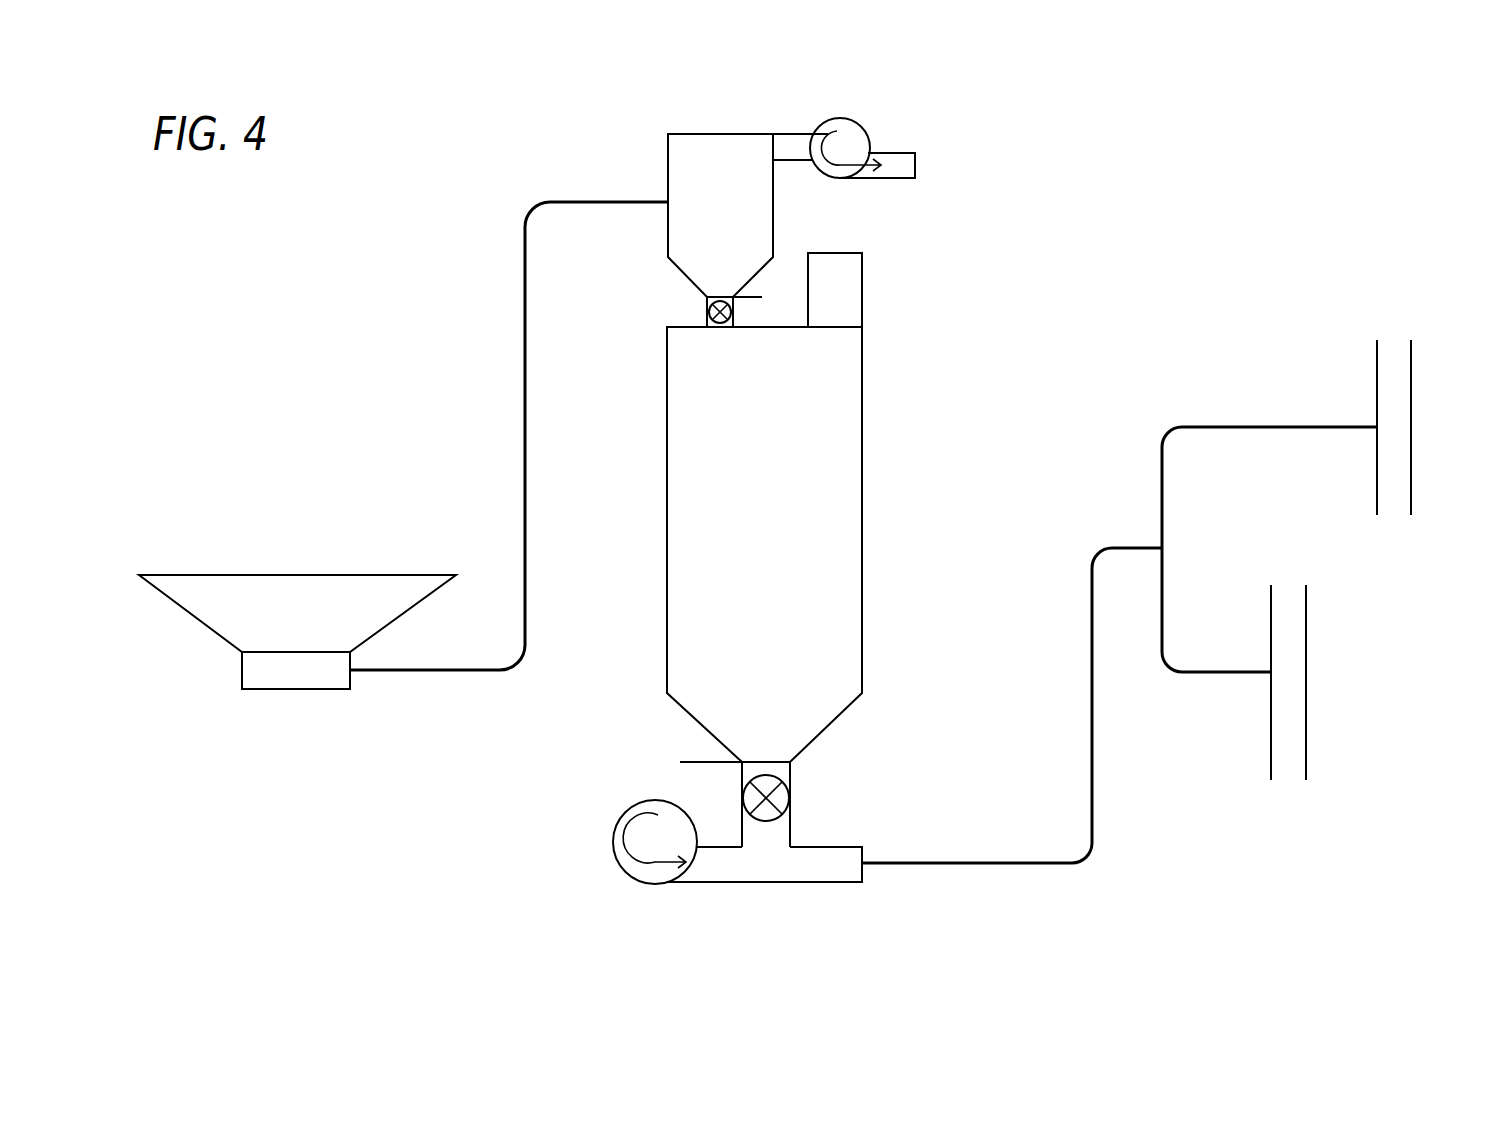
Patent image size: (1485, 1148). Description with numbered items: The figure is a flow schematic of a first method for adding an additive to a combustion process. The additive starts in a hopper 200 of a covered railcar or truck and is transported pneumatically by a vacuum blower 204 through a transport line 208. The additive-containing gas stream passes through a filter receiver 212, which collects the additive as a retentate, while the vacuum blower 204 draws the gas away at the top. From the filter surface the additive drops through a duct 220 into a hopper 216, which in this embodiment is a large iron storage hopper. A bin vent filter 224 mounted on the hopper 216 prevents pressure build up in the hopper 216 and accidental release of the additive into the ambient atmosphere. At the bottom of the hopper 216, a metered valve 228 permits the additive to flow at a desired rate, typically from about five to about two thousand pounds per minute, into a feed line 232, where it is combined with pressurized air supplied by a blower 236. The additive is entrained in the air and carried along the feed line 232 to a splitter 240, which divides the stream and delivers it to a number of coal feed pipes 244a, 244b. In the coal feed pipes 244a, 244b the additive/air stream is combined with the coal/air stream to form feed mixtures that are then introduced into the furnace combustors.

The hopper 200 is at (203, 626).
The vacuum blower 204 is at (835, 118).
The transport line 208 is at (486, 672).
The filter receiver 212 is at (693, 134).
The hopper 216 is at (862, 645).
The duct 220 is at (705, 305).
The bin vent filter 224 is at (862, 307).
The metered valve 228 is at (785, 792).
The feed line 232 is at (1033, 863).
The blower 236 is at (641, 806).
The splitter 240 is at (1160, 546).
The coal feed pipe 244a is at (1376, 391).
The coal feed pipe 244b is at (1270, 745).